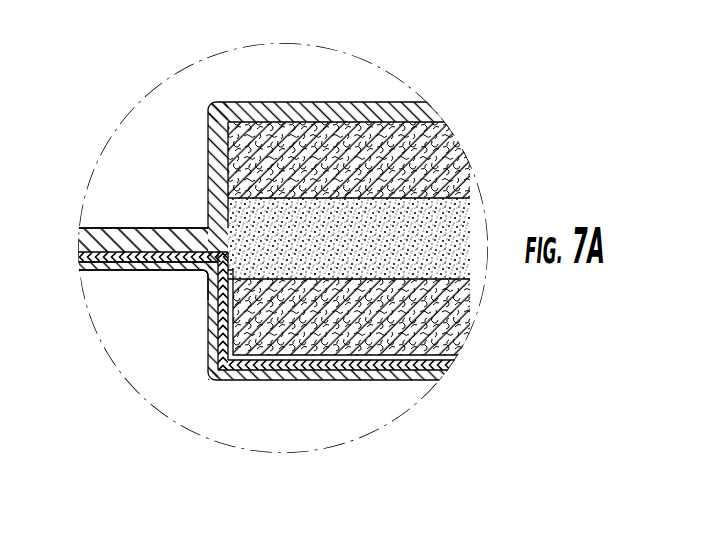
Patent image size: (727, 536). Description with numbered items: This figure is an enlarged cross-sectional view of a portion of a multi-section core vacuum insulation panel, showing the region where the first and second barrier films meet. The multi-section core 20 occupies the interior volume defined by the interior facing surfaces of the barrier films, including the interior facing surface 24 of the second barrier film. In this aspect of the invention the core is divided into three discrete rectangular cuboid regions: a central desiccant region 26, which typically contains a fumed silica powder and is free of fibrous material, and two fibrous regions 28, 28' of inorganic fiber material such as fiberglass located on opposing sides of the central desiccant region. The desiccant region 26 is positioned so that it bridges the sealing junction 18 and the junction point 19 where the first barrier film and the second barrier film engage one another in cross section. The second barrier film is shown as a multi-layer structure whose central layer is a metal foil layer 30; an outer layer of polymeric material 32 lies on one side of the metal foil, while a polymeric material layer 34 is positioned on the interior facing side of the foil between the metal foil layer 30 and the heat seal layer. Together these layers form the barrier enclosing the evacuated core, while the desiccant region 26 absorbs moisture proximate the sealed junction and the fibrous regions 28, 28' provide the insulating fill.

The sealing junction 18 is at (133, 243).
The junction point 19 is at (208, 270).
The multi-section core 20 is at (268, 214).
The interior facing surface of the second barrier film 24 is at (293, 333).
The desiccant region 26 is at (452, 260).
The fibrous region 28 is at (355, 125).
The fibrous region 28' is at (358, 366).
The metal foil layer 30 is at (360, 367).
The polymeric material outer layer 32 is at (250, 380).
The polymeric material layer 34 is at (443, 348).